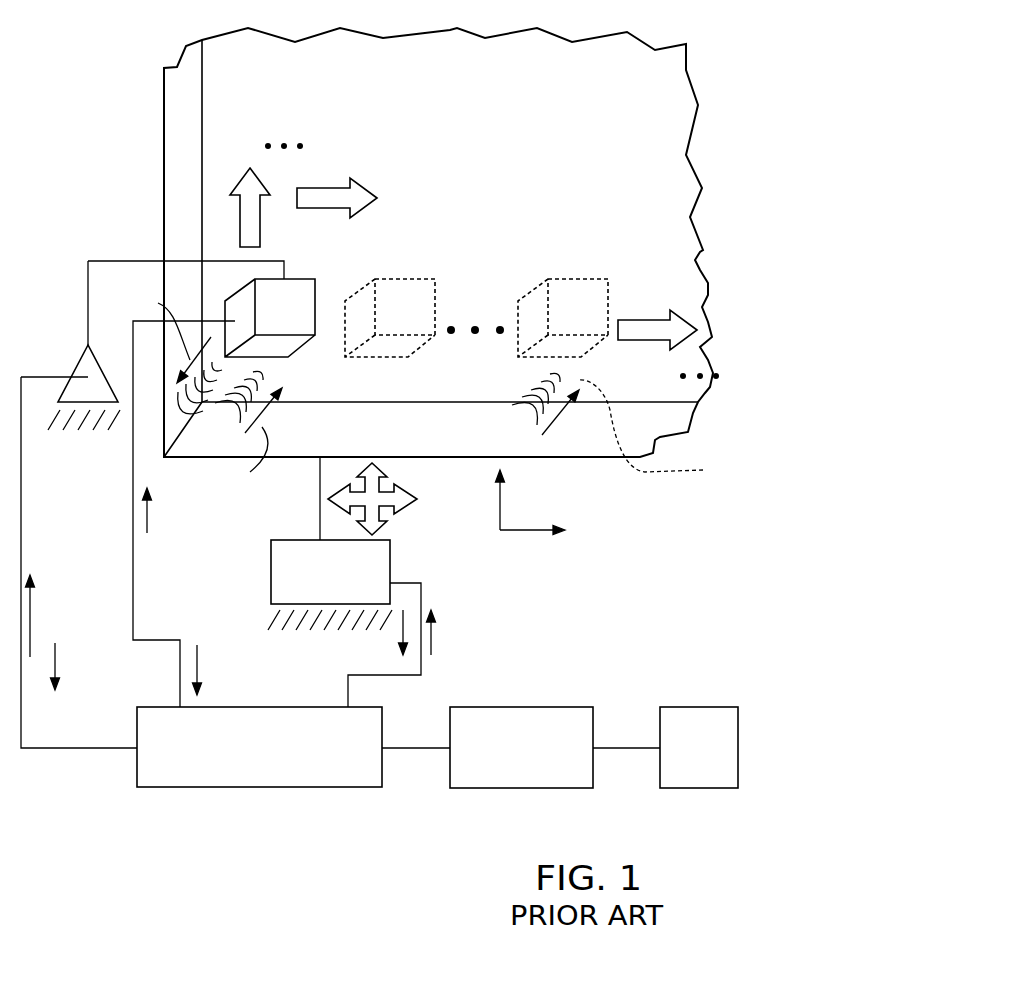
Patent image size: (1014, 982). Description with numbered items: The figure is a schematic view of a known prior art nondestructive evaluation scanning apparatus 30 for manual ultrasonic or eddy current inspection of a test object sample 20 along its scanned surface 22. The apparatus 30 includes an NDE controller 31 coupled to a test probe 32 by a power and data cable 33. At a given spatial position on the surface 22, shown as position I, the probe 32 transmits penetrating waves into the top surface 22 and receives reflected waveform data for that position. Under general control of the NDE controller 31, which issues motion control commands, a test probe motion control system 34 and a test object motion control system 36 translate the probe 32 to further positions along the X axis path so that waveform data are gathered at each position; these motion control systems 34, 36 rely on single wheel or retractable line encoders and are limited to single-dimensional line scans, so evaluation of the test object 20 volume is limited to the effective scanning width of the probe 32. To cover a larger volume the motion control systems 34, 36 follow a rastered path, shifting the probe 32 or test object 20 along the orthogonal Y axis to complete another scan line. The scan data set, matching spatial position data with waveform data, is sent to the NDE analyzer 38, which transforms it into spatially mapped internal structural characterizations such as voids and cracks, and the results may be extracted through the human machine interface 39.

The test object sample 20 is at (125, 135).
The scanned surface 22 is at (315, 83).
The NDE inspection test apparatus 30 is at (95, 818).
The NDE controller 31 is at (307, 780).
The test probe 32 is at (310, 295).
The power and data cable 33 is at (133, 483).
The test probe motion control system 34 is at (57, 365).
The test object motion control system 36 is at (369, 568).
The NDE analyzer 38 is at (512, 712).
The human machine interface 39 is at (684, 714).